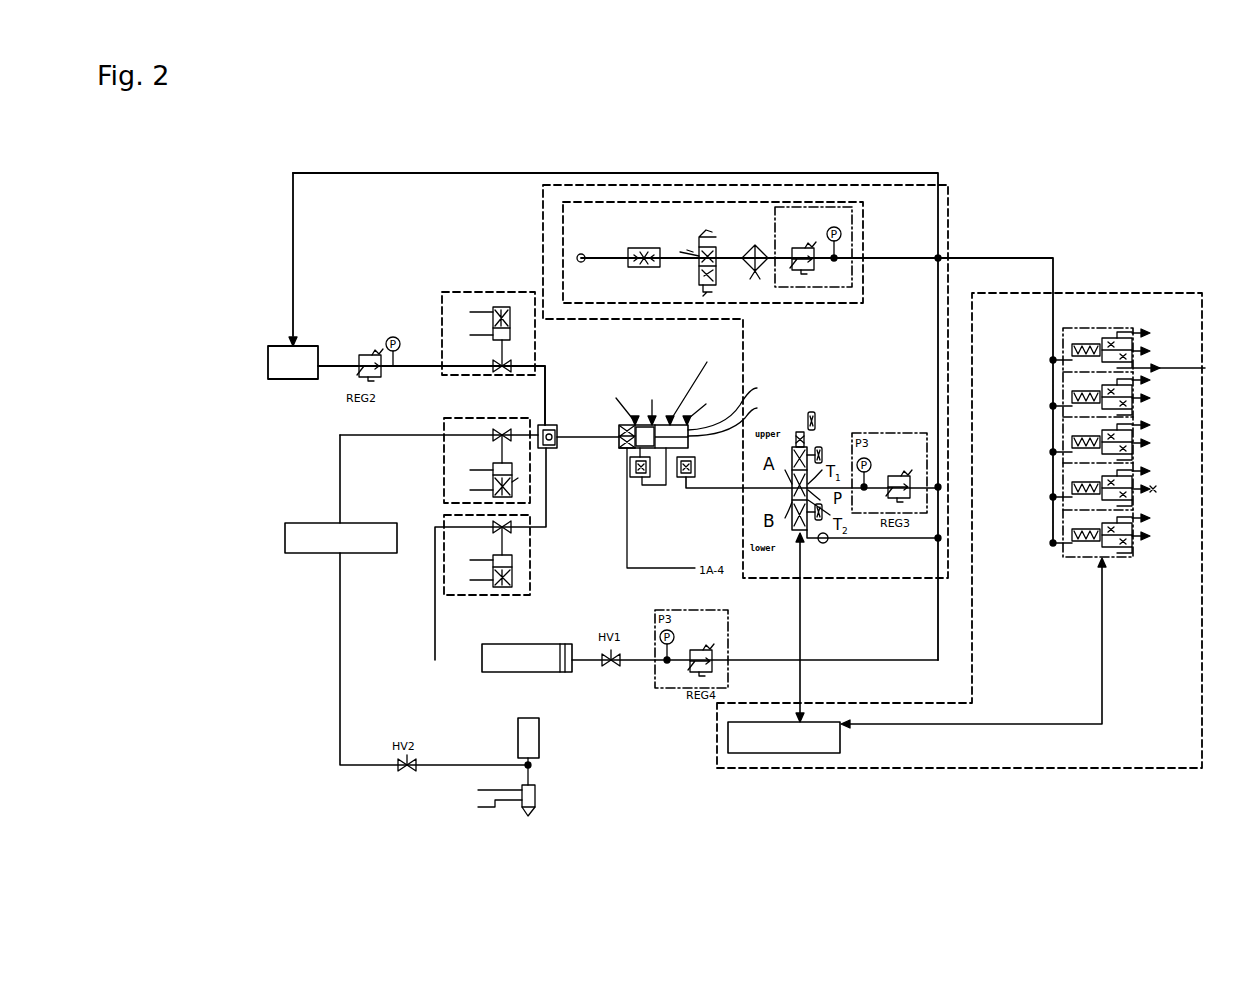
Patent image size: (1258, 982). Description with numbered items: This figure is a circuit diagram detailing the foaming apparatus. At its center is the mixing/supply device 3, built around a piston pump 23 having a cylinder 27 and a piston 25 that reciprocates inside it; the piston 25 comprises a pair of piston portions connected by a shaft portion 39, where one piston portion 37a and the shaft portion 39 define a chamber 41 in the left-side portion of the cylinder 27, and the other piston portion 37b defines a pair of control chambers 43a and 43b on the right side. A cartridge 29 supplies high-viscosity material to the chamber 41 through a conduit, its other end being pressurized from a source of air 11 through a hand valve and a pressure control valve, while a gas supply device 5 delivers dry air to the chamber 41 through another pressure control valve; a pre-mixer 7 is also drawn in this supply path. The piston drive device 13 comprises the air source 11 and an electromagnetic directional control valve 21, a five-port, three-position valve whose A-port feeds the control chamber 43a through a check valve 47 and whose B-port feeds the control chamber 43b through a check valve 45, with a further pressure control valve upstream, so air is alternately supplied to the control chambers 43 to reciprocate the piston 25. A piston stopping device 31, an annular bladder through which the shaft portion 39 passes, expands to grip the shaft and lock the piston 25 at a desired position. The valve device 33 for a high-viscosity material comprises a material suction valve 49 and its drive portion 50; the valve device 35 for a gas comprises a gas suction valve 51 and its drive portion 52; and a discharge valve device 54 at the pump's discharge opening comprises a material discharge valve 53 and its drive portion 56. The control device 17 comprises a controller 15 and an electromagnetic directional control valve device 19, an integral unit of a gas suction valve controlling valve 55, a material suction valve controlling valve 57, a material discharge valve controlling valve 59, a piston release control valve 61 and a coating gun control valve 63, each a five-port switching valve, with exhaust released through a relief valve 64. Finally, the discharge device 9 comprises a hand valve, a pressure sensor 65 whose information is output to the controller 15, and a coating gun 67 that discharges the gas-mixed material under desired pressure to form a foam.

The mixing/supply device 3 is at (333, 219).
The gas supply device 5 is at (300, 380).
The pre-mixer 7 is at (362, 523).
The discharge device 9 is at (618, 887).
The source of air 11 is at (866, 222).
The piston drive device 13 is at (950, 210).
The controller 15 is at (842, 738).
The control device 17 is at (795, 770).
The electromagnetic directional control valve device 19 is at (1094, 472).
The electromagnetic directional control valve 21 is at (828, 378).
The piston pump 23 is at (657, 387).
The piston 25 is at (548, 425).
The cylinder 27 is at (552, 450).
The cartridge 29 is at (527, 669).
The piston stopping device 31 is at (623, 452).
The valve device for a high-viscosity material 33 is at (532, 563).
The valve device for a gas 35 is at (496, 292).
The piston portion 37a is at (556, 430).
The piston portion 37b is at (661, 482).
The shaft portion 39 is at (633, 420).
The chamber 41 is at (538, 428).
The control chamber 43 is at (813, 462).
The control chamber 43a is at (736, 405).
The control chamber 43b is at (802, 398).
The check valve 45 is at (696, 466).
The check valve 47 is at (637, 480).
The material suction valve 49 is at (492, 534).
The drive portion 50 is at (595, 445).
The gas suction valve 51 is at (510, 358).
The drive portion 52 is at (510, 322).
The material discharge valve 53 is at (510, 444).
The discharge valve device 54 is at (444, 470).
The gas suction valve controlling valve 55 is at (1050, 348).
The drive portion 56 is at (512, 556).
The material suction valve controlling valve 57 is at (1050, 395).
The material discharge valve controlling valve 59 is at (1050, 441).
The piston release control valve 61 is at (1050, 483).
The coating gun control valve 63 is at (1050, 528).
The relief valve 64 is at (1184, 368).
The pressure sensor 65 is at (539, 738).
The coating gun 67 is at (535, 797).